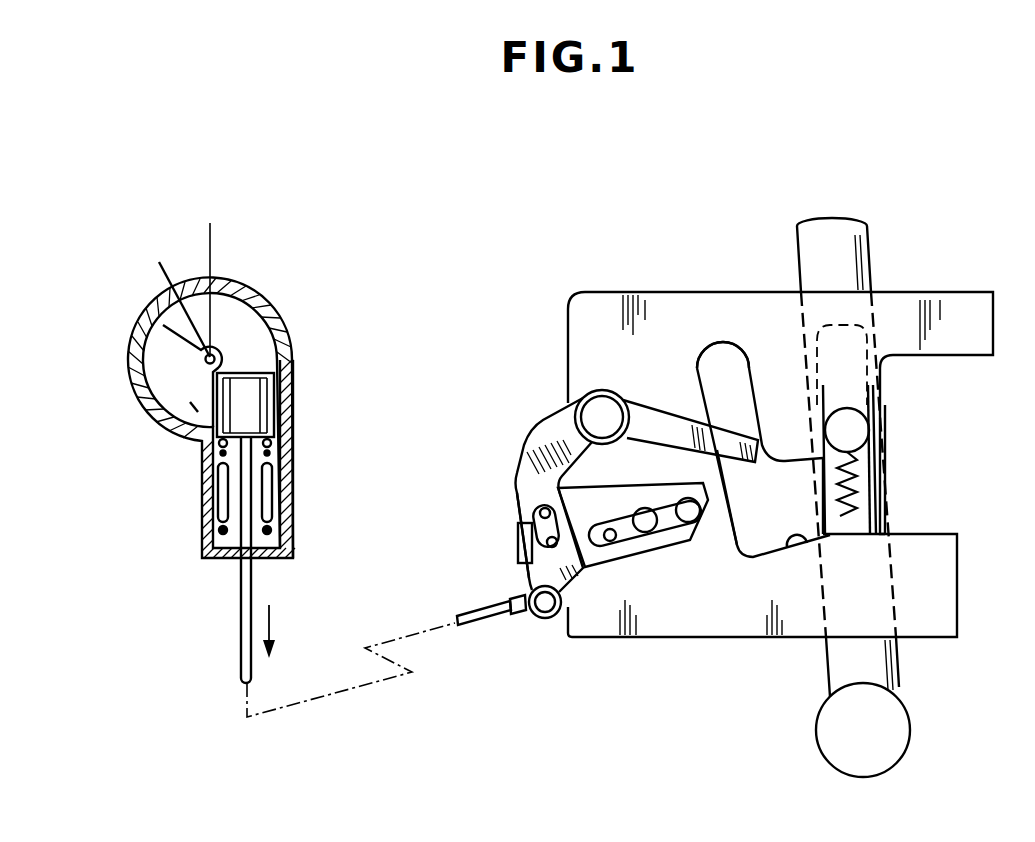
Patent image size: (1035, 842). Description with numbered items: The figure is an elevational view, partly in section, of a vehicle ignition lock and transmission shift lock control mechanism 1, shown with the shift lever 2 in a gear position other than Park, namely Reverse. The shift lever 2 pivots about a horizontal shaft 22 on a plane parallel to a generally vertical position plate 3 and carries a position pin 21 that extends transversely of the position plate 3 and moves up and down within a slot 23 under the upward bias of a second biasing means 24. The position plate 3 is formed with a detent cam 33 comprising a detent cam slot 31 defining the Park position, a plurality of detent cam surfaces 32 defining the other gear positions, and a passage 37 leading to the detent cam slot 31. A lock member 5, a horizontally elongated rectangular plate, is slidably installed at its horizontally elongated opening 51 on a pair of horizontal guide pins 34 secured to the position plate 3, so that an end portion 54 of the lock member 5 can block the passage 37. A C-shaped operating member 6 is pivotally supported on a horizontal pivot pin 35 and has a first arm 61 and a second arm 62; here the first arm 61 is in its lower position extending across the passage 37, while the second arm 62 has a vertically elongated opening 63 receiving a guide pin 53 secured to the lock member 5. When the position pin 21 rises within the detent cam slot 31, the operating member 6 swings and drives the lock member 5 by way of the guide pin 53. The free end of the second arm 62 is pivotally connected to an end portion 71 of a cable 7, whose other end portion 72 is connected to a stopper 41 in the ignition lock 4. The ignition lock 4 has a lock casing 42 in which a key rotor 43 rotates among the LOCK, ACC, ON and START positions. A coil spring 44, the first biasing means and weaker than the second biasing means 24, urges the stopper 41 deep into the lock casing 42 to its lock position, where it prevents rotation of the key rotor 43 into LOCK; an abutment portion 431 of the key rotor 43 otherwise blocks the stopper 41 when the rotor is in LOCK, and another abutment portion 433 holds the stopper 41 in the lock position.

The vehicle ignition lock and transmission shift lock control mechanism 1 is at (522, 288).
The shift lever 2 is at (848, 258).
The position plate 3 is at (762, 310).
The ignition lock 4 is at (302, 425).
The lock member 5 is at (610, 540).
The operating member 6 is at (534, 424).
The cable 7 is at (467, 628).
The position pin 21 is at (853, 438).
The horizontal shaft 22 is at (888, 727).
The slot 23 is at (890, 507).
The second biasing means 24 is at (840, 493).
The detent cam slot 31 is at (713, 365).
The detent cam surfaces 32 is at (930, 362).
The detent cam 33 is at (805, 548).
The guide pins 34 is at (688, 513).
The pivot pin 35 is at (602, 408).
The passage 37 is at (743, 478).
The stopper 41 is at (245, 392).
The lock casing 42 is at (285, 362).
The key rotor 43 is at (172, 386).
The coil spring 44 is at (265, 505).
The horizontally elongated opening 51 is at (590, 572).
The guide pin 53 is at (520, 545).
The end portion 54 is at (703, 482).
The first arm 61 is at (655, 423).
The second arm 62 is at (540, 572).
The vertically elongated opening 63 is at (530, 508).
The end portion 71 is at (535, 618).
The other end portion 72 is at (245, 488).
The abutment portion 431 is at (188, 407).
The abutment portion 433 is at (222, 345).